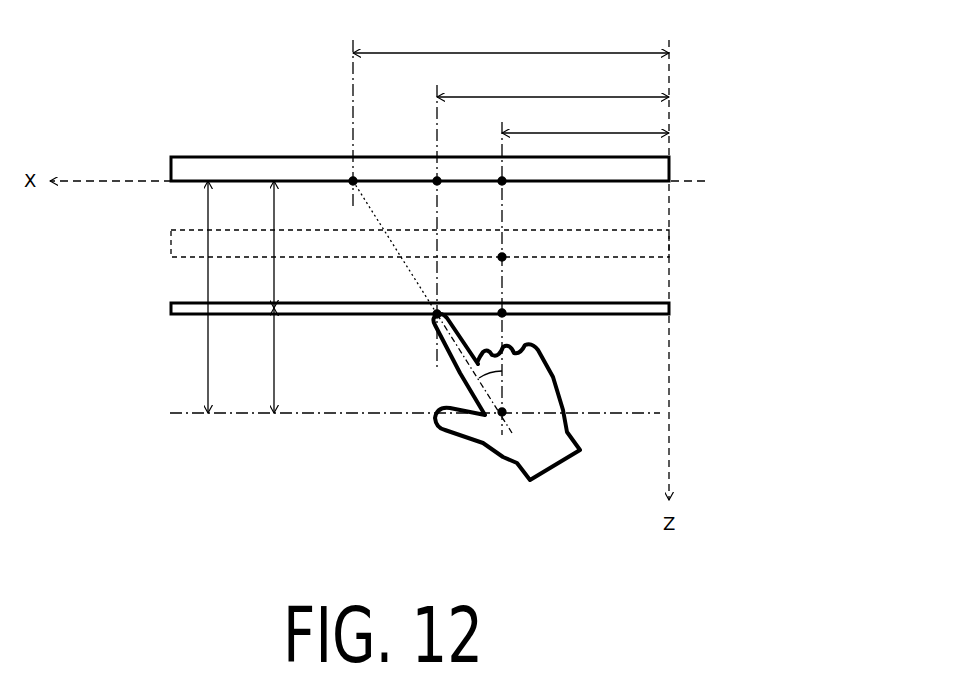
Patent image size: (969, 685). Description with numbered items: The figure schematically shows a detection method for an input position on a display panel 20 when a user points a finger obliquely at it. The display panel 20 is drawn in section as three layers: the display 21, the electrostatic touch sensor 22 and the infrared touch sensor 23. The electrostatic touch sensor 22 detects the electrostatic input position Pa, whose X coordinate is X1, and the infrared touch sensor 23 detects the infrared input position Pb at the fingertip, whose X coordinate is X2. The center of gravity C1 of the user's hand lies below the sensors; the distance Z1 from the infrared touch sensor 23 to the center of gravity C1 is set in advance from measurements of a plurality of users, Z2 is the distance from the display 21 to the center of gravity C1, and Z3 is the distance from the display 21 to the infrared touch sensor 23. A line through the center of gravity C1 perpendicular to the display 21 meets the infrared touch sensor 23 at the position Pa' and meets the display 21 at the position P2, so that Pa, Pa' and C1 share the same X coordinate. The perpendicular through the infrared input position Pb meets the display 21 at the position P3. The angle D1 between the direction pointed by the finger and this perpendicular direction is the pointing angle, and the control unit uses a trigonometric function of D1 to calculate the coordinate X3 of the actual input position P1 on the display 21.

The display panel 20 is at (714, 95).
The display 21 is at (171, 166).
The electrostatic touch sensor 22 is at (171, 240).
The infrared touch sensor 23 is at (171, 308).
The input position P1 is at (351, 177).
The position P2 is at (500, 177).
The position P3 is at (435, 177).
The electrostatic input position Pa is at (559, 230).
The position Pa' is at (561, 291).
The infrared input position Pb is at (434, 318).
The center of gravity C1 is at (508, 409).
The pointing angle D1 is at (484, 374).
The X coordinate of electrostatic input position X1 is at (585, 120).
The X coordinate of infrared input position X2 is at (553, 84).
The X coordinate of input position X3 is at (511, 40).
The distance Z1 is at (258, 360).
The distance Z2 is at (192, 297).
The distance Z3 is at (258, 244).